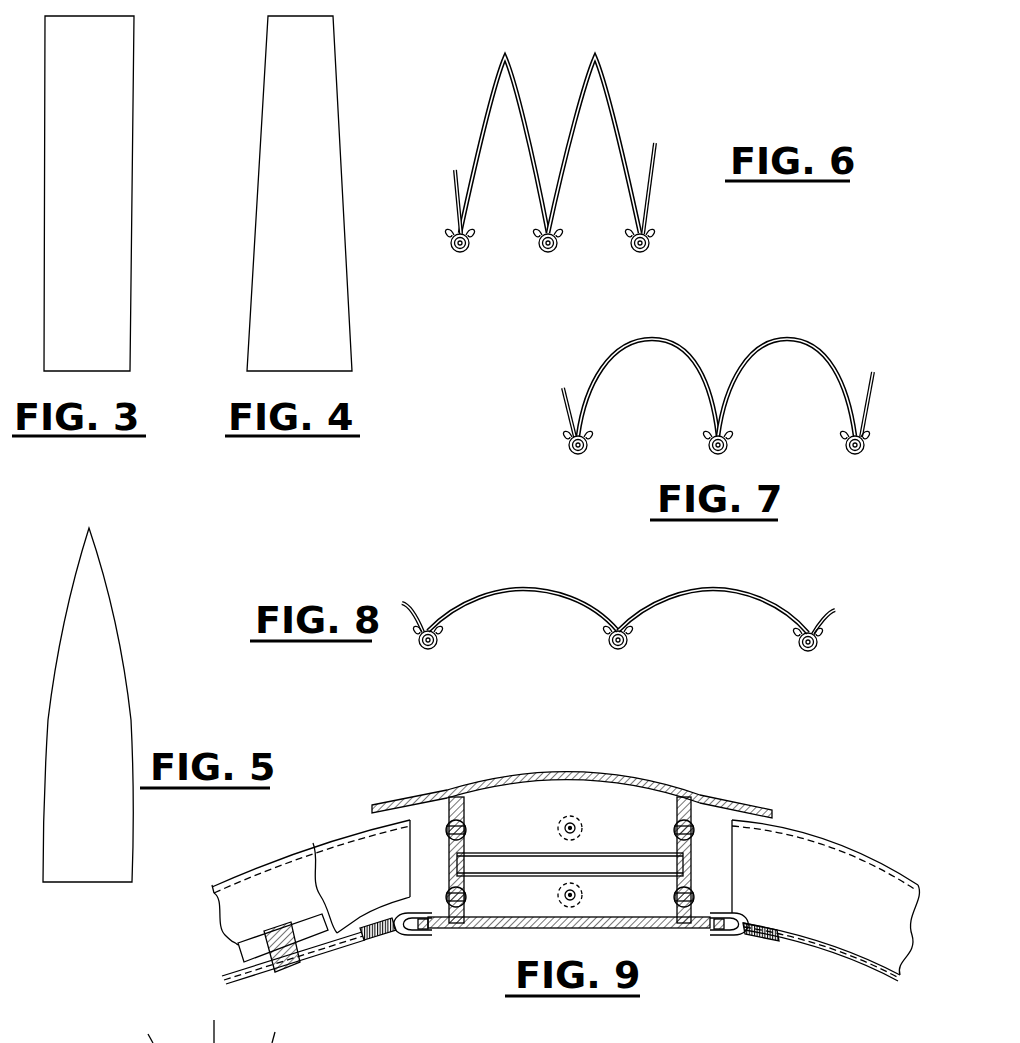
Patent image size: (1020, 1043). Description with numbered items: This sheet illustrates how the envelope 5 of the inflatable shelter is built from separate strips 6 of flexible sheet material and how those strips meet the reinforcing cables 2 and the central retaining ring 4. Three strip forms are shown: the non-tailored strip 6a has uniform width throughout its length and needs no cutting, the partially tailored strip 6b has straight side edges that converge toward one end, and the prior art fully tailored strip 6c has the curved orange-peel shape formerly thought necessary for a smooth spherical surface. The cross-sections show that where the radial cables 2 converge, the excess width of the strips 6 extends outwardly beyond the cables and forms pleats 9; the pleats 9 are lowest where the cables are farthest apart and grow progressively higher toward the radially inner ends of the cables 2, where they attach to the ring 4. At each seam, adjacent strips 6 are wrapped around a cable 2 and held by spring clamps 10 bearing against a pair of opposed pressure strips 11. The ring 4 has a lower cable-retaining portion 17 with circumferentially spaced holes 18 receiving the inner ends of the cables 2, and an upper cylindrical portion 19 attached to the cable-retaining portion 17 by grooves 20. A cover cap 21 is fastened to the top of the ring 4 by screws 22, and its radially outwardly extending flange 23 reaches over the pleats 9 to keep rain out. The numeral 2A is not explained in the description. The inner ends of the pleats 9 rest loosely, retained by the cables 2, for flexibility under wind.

In FIG. 3, the non-tailored strip 6a is at (100, 140).
In FIG. 4, the partially tailored strip 6b is at (320, 73).
In FIG. 5, the fully tailored strip 6c is at (90, 610).
In FIG. 6, the strips 6 is at (480, 102).
In FIG. 7, the strips 6 is at (603, 368).
In FIG. 8, the strips 6 is at (410, 600).
In FIG. 9, the strips 6 is at (233, 918).
In FIG. 6, the pleats 9 is at (596, 56).
In FIG. 7, the pleats 9 is at (655, 338).
In FIG. 9, the pleats 9 is at (352, 831).
In FIG. 6, the reinforcing cables 2 is at (460, 253).
In FIG. 7, the reinforcing cables 2 is at (572, 456).
In FIG. 8, the reinforcing cables 2 is at (428, 652).
In FIG. 9, the reinforcing cables 2 is at (228, 972).
In FIG. 6, the spring clamps 10 is at (474, 254).
In FIG. 7, the spring clamps 10 is at (588, 448).
In FIG. 8, the spring clamps 10 is at (437, 640).
In FIG. 9, the spring clamps 10 is at (292, 963).
In FIG. 9, the retaining ring 4 is at (482, 788).
In FIG. 9, the envelope 5 is at (868, 855).
In FIG. 9, the pressure strips 11 is at (258, 950).
In FIG. 9, the cable-retaining portion 17 is at (535, 918).
In FIG. 9, the holes 18 is at (432, 935).
In FIG. 9, the upper cylindrical portion 19 is at (700, 862).
In FIG. 9, the grooves 20 is at (556, 896).
In FIG. 9, the cover cap 21 is at (630, 783).
In FIG. 9, the screws 22 is at (568, 815).
In FIG. 9, the flange 23 is at (394, 801).
In FIG. 9, the band section 2A is at (200, 1042).